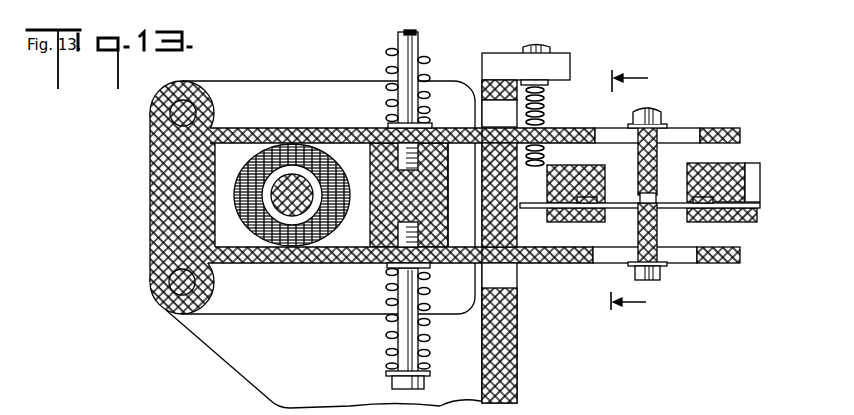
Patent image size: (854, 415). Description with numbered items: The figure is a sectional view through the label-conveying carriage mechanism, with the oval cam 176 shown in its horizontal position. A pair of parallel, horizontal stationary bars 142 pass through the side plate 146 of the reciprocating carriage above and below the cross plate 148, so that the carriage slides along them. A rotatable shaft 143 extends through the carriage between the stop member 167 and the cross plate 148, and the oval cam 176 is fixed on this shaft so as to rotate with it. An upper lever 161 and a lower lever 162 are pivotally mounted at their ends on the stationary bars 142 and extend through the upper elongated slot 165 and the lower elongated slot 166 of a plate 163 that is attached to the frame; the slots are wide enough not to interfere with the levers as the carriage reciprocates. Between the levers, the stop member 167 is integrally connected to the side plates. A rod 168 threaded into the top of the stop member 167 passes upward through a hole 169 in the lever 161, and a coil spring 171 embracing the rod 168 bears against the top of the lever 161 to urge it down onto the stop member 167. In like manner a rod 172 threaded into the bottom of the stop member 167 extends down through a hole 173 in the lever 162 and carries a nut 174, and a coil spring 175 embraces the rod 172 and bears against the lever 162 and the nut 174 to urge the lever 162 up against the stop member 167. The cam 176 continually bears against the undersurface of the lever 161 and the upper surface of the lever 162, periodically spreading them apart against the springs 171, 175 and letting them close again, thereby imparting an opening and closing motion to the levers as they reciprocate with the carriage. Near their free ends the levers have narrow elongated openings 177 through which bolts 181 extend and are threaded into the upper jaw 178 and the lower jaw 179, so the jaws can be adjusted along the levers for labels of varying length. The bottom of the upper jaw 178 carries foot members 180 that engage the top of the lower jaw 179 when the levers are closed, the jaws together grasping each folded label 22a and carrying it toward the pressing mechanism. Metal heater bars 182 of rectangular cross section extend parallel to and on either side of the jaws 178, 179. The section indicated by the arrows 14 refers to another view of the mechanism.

The section line 14- 14 is at (640, 191).
The folded label 22a is at (619, 208).
The stationary bars 142 is at (172, 114).
The rotatable shaft 143 is at (302, 192).
The side plate 146 is at (267, 93).
The cross plate 148 is at (158, 212).
The lever 161 is at (345, 115).
The lever 162 is at (333, 264).
The plate 163 is at (544, 161).
The elongated slot 165 is at (491, 108).
The elongated slot 166 is at (510, 283).
The stop member 167 is at (378, 246).
The rod 168 is at (414, 43).
The hole 169 is at (428, 126).
The coil spring 171 is at (394, 56).
The rod 172 is at (405, 328).
The hole 173 is at (426, 264).
The nut 174 is at (392, 383).
The coil spring 175 is at (430, 341).
The oval cam 176 is at (258, 224).
The elongated openings 177 is at (690, 133).
The jaw 178 is at (657, 155).
The jaw 179 is at (657, 233).
The foot members 180 is at (641, 200).
The bolts 181 is at (661, 114).
The heater bars 182 is at (600, 167).